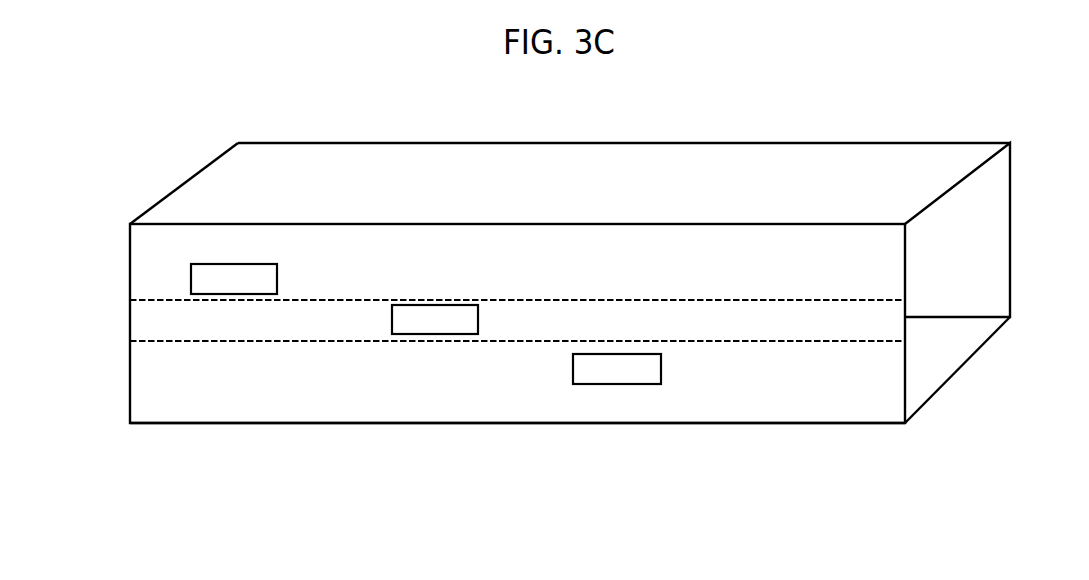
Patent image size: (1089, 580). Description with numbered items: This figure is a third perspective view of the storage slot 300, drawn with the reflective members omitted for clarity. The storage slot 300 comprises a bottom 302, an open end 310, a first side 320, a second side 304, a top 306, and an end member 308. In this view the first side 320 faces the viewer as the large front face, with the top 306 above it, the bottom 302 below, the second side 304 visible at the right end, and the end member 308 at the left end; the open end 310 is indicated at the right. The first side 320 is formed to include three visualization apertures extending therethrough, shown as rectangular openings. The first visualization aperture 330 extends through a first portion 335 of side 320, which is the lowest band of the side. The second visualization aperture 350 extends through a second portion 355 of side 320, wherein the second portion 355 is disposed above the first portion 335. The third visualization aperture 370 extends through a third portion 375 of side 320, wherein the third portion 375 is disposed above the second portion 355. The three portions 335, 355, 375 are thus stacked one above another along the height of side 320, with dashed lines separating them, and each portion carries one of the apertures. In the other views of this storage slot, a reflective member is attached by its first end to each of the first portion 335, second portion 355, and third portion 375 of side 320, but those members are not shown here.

The storage slot 300 is at (531, 356).
The bottom 302 is at (951, 358).
The second side 304 is at (972, 258).
The top 306 is at (588, 190).
The end member 308 is at (226, 216).
The open end 310 is at (1017, 245).
The first side 320 is at (525, 270).
The first visualization aperture 330 is at (655, 370).
The first portion 335 is at (102, 341).
The second visualization aperture 350 is at (472, 320).
The second portion 355 is at (102, 299).
The third visualization aperture 370 is at (268, 280).
The third portion 375 is at (102, 224).